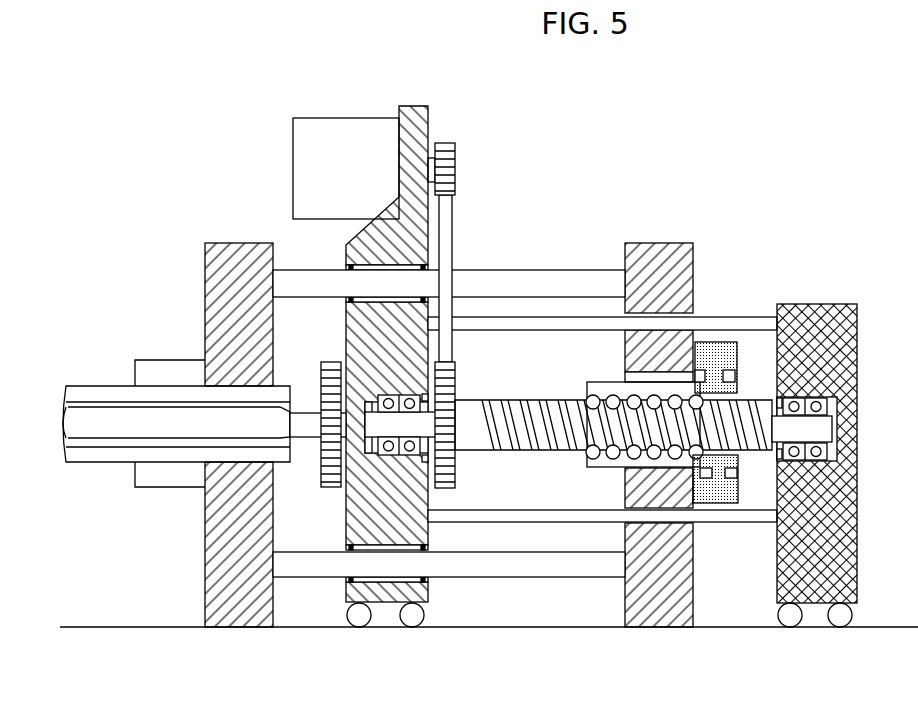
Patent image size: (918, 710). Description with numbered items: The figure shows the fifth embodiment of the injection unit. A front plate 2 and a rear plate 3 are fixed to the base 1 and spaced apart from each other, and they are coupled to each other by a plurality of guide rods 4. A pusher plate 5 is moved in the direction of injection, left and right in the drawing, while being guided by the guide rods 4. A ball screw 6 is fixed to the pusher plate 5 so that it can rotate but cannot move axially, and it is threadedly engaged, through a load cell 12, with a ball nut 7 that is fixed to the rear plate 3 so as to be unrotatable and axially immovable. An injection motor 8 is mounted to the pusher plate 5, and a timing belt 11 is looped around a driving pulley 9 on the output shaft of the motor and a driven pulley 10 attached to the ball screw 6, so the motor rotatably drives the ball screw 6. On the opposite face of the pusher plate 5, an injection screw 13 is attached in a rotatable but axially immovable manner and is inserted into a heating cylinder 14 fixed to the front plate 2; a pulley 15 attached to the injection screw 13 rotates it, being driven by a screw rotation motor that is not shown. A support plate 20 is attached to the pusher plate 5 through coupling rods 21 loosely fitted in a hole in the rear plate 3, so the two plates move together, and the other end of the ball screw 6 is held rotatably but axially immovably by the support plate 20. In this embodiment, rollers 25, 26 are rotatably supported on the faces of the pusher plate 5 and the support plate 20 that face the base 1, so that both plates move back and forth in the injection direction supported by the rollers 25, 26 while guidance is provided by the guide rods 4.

The base 1 is at (140, 627).
The front plate 2 is at (205, 525).
The rear plate 3 is at (662, 243).
The guide rods 4 is at (507, 270).
The pusher plate 5 is at (350, 238).
The ball screw 6 is at (563, 397).
The ball nut 7 is at (594, 468).
The injection motor 8 is at (358, 118).
The driving pulley 9 is at (455, 165).
The driven pulley 10 is at (458, 483).
The timing belt 11 is at (455, 225).
The load cell 12 is at (720, 342).
The injection screw 13 is at (165, 412).
The heating cylinder 14 is at (110, 388).
The pulley 15 is at (366, 449).
The support plate 20 is at (808, 304).
The coupling rods 21 is at (727, 523).
The rollers 25 is at (425, 627).
The rollers 26 is at (840, 627).